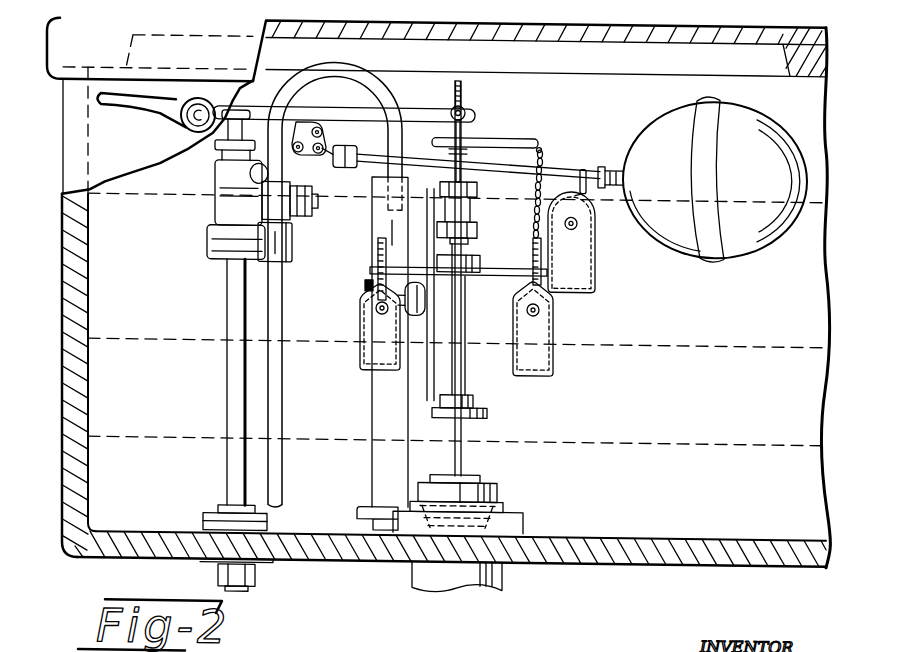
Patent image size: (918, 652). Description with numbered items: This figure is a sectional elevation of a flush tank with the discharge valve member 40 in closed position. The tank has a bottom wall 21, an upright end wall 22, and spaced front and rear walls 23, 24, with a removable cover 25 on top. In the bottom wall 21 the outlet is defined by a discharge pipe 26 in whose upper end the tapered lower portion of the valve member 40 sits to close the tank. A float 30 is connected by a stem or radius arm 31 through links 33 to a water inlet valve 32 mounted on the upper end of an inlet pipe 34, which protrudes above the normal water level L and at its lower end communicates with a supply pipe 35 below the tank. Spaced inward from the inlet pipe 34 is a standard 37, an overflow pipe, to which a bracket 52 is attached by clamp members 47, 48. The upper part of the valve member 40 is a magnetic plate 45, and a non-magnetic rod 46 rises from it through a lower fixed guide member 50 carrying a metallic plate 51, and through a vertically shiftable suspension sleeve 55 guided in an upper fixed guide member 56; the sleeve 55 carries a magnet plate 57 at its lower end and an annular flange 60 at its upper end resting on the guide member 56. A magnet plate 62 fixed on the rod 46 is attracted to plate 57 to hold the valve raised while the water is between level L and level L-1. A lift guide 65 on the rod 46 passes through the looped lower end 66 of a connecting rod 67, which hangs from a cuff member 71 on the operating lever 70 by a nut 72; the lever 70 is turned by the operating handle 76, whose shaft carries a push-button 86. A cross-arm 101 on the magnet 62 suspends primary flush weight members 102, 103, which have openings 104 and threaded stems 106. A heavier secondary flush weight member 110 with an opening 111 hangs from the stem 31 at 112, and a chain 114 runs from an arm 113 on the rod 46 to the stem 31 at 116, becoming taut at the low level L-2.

The bottom wall 21 is at (597, 557).
The end wall 22 is at (88, 383).
The front wall 23 is at (128, 162).
The rear wall 24 is at (612, 413).
The cover 25 is at (597, 16).
The outlet pipe 26 is at (505, 508).
The float 30 is at (751, 155).
The radius arm 31 is at (548, 163).
The water inlet valve 32 is at (215, 144).
The links 33 is at (300, 124).
The inlet pipe 34 is at (228, 375).
The water inlet pipe 35 is at (250, 575).
The standard 37 is at (377, 398).
The valve member 40 is at (500, 485).
The metallic plate 45 is at (486, 470).
The rod 46 is at (461, 371).
The clamp member 47 is at (395, 305).
The clamp member 48 is at (364, 278).
The guide member 50 is at (475, 396).
The metallic plate 51 is at (480, 409).
The bracket 52 is at (433, 364).
The suspension sleeve 55 is at (477, 218).
The upper guide member 56 is at (478, 186).
The metallic plate 57 is at (469, 232).
The annular flange 60 is at (444, 178).
The metallic plate 62 is at (481, 258).
The lift guide 65 is at (472, 199).
The looped lower end 66 is at (452, 146).
The connecting rod 67 is at (456, 126).
The operating lever 70 is at (412, 106).
The cuff member 71 is at (466, 99).
The nut 72 is at (463, 84).
The operating handle 76 is at (136, 106).
The push-button 86 is at (190, 127).
The cross-arm 101 is at (498, 268).
The primary flush weight member 102 is at (548, 350).
The primary flush weight member 103 is at (362, 352).
The openings 104 is at (376, 303).
The threaded stem 106 is at (377, 243).
The secondary flush weight member 110 is at (596, 264).
The opening 111 is at (578, 218).
The suspension point 112 is at (583, 161).
The arm 113 is at (503, 113).
The link chain 114 is at (537, 206).
The connection point 116 is at (618, 170).
The normal water level L is at (641, 190).
The intermediate water level L-1 is at (640, 338).
The low water level L-2 is at (641, 438).